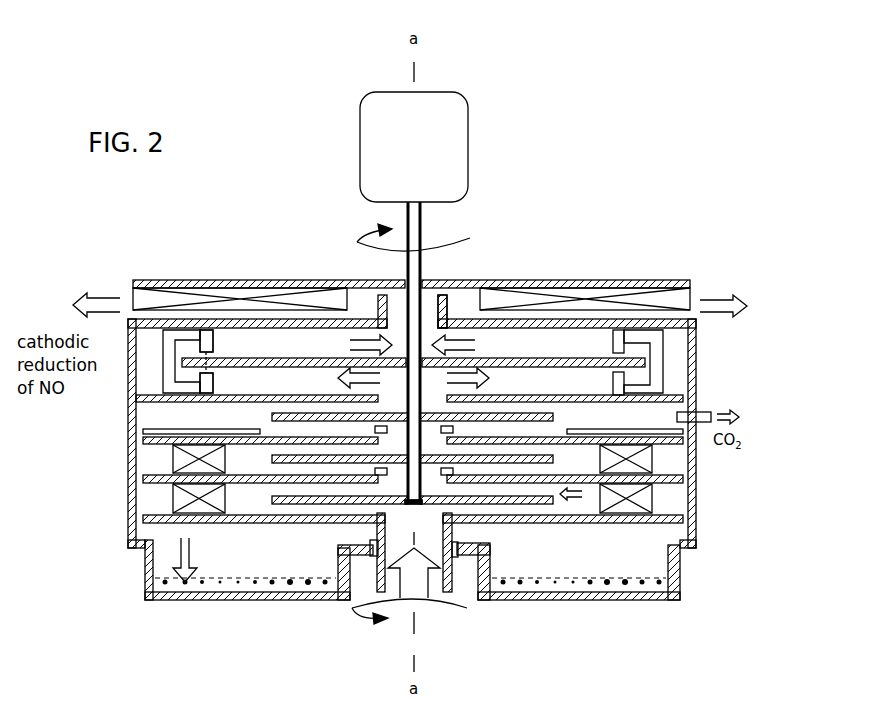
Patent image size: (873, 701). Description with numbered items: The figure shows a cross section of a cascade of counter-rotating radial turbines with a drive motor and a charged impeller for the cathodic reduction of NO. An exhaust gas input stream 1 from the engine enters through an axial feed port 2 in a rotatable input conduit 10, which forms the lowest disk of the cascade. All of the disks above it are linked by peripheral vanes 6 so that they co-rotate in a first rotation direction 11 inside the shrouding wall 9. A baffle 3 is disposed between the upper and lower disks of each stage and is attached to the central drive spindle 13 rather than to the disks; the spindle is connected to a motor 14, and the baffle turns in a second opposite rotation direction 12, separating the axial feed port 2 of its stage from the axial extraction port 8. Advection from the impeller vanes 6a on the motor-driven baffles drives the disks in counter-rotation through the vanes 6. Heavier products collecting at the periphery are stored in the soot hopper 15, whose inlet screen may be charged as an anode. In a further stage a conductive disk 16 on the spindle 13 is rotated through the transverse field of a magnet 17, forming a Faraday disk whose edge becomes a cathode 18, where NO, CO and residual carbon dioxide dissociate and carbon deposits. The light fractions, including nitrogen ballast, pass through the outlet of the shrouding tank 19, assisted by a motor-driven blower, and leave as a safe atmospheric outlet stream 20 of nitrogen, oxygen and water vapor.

The exhaust gas input stream 1 is at (465, 596).
The axial feed port 2 is at (409, 517).
The baffle 3 is at (272, 417).
The vane 6 is at (616, 431).
The impeller vane 6a is at (663, 296).
The axial extraction port 8 is at (409, 457).
The shrouding wall 9 is at (128, 454).
The input conduit 10 is at (380, 573).
The first rotation direction 11 is at (408, 624).
The second opposite rotation direction 12 is at (402, 243).
The central drive spindle 13 is at (410, 222).
The motor 14 is at (414, 147).
The soot hopper 15 is at (412, 569).
The conductive disk 16 is at (270, 358).
The magnet 17 is at (165, 362).
The cathode 18 is at (200, 365).
The outlet of shrouding tank 19 is at (428, 313).
The atmospheric outlet stream 20 is at (770, 289).